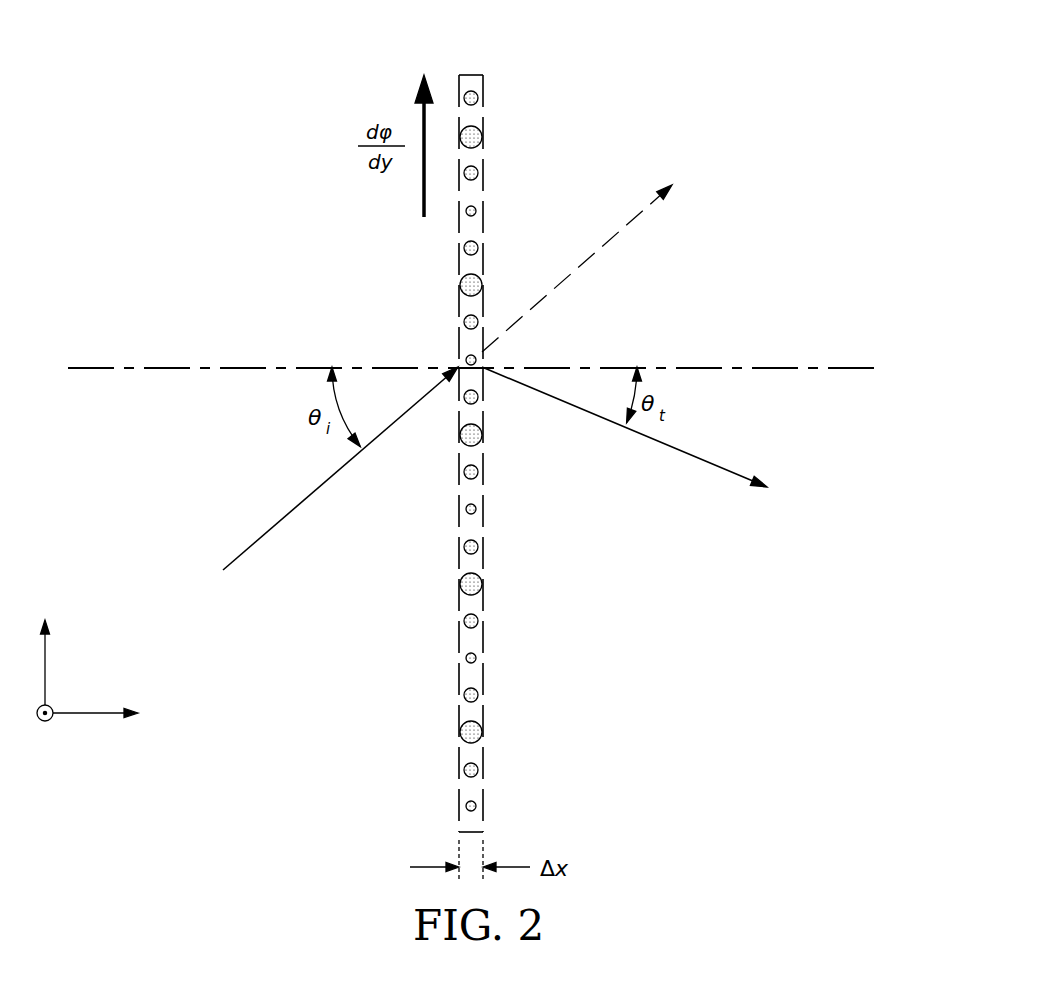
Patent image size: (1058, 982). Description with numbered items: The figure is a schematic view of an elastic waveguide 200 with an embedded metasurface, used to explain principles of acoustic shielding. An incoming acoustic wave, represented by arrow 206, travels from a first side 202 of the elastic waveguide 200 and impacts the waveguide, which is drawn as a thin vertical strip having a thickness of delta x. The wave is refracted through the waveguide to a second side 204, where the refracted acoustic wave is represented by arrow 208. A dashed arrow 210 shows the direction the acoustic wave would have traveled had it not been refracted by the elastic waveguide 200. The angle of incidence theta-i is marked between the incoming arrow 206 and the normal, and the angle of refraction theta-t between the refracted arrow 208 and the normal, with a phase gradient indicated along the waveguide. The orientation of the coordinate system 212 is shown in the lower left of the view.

The elastic waveguide 200 is at (470, 74).
The first side 202 is at (232, 92).
The second side 204 is at (708, 92).
The incoming acoustic wave arrow 206 is at (300, 503).
The refracted acoustic wave arrow 208 is at (675, 449).
The dashed arrow 210 is at (596, 250).
The coordinate system 212 is at (75, 742).